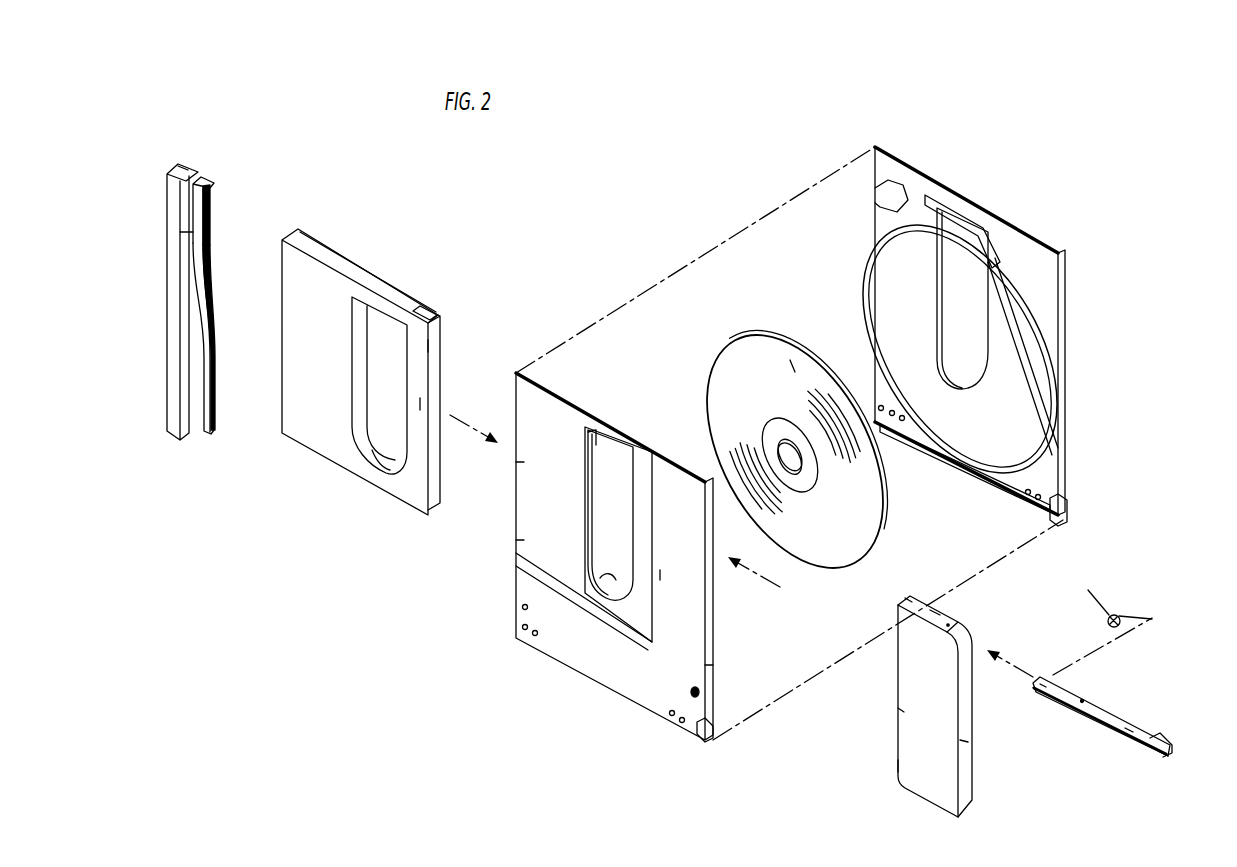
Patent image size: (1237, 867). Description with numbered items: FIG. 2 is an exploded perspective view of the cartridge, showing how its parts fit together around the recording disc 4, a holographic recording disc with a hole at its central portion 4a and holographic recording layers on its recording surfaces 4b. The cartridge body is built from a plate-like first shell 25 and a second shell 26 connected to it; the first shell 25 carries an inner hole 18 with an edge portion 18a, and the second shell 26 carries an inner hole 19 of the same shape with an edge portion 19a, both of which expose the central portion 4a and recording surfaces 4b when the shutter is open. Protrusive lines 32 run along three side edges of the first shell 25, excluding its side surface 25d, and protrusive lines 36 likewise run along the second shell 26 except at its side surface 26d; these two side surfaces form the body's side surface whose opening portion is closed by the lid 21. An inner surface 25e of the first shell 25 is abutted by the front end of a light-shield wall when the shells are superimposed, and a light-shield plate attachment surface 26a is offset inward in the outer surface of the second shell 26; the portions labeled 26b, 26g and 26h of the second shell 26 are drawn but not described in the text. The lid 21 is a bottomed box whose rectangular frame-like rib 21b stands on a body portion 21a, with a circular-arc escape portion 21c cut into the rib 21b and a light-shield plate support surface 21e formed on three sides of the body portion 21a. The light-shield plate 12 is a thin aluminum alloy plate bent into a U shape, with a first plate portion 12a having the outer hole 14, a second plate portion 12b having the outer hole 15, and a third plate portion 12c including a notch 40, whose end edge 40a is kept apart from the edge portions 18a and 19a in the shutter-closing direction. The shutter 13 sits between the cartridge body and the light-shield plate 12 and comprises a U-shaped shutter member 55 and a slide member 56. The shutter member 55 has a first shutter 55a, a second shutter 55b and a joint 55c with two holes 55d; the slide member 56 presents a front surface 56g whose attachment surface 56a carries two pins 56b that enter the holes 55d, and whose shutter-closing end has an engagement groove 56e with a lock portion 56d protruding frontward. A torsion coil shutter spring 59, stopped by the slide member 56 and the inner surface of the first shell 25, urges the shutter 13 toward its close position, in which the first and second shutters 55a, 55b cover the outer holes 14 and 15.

The recording disc 4 is at (734, 328).
The central portion 4a is at (812, 473).
The recording surfaces 4b is at (795, 375).
The light-shield plate 12 is at (311, 230).
The first plate portion 12a is at (434, 347).
The second plate portion 12b is at (420, 404).
The third plate portion 12c is at (367, 280).
The shutter 13 is at (888, 768).
The outer hole 14 is at (374, 337).
The outer hole 15 is at (372, 452).
The inner hole 18 is at (945, 265).
The edge portion 18a is at (988, 320).
The inner hole 19 is at (612, 580).
The edge portion 19a is at (633, 531).
The lid 21 is at (176, 437).
The body portion 21a is at (190, 165).
The rib 21b is at (197, 203).
The escape portion 21c is at (200, 274).
The light-shield plate support surface 21e is at (182, 231).
The first shell 25 is at (936, 166).
The side surface 25d is at (872, 178).
The inner surface 25e is at (970, 428).
The second shell 26 is at (578, 392).
The light-shield plate attachment surface 26a is at (648, 560).
The rear edge of lower shell 26b is at (527, 466).
The side surface 26d is at (518, 540).
The recessed frame 26g is at (648, 492).
The step portion 26h is at (635, 483).
The protrusive lines 32 is at (1020, 505).
The protrusive lines 36 is at (711, 668).
The notch 40 is at (441, 312).
The end edge 40a is at (415, 308).
The shutter member 55 is at (988, 782).
The first shutter 55a is at (966, 742).
The second shutter 55b is at (898, 713).
The joint 55c is at (935, 613).
The holes 55d is at (912, 598).
The slide member 56 is at (1113, 698).
The attachment surface 56a is at (1074, 698).
The pins 56b is at (1044, 686).
The lock portion 56d is at (1160, 743).
The engagement groove 56e is at (1163, 757).
The front surface 56g is at (1130, 725).
The shutter spring 59 is at (1108, 605).